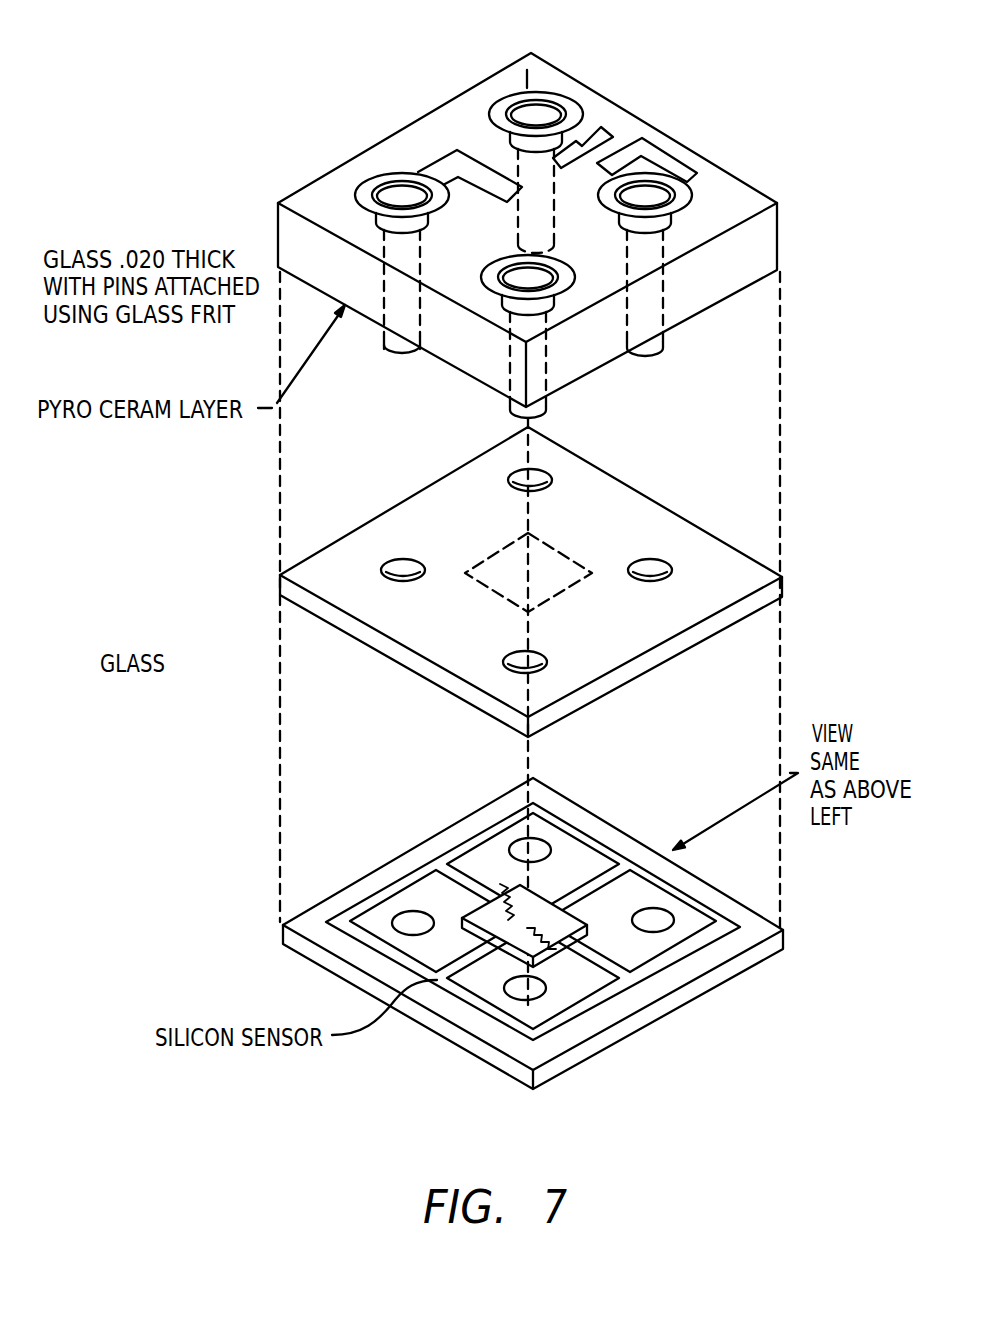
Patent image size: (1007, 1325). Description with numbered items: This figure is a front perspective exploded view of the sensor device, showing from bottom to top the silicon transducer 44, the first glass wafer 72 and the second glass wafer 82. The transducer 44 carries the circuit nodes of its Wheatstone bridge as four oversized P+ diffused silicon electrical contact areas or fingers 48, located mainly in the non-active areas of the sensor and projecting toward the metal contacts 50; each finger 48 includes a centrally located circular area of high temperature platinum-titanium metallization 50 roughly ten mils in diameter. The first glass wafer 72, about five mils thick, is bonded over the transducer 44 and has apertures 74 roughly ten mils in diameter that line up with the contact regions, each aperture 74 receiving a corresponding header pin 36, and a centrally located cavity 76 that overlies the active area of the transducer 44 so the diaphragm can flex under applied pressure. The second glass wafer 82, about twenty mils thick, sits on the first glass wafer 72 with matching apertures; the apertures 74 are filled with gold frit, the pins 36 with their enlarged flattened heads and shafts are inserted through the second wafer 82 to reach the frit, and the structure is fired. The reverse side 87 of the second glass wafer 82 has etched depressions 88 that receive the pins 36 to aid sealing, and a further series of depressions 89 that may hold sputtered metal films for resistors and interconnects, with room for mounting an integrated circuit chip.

The second glass wafer 82 is at (273, 225).
The reverse side 87 is at (477, 250).
The depressions 88 is at (512, 95).
The depressions 89 is at (443, 162).
The header pin 36 is at (382, 353).
The first glass wafer 72 is at (278, 577).
The aperture 74 is at (653, 583).
The cavity 76 is at (515, 568).
The transducer 44 is at (282, 933).
The electrical contact areas or fingers 48 is at (492, 978).
The metal contacts 50 is at (413, 925).